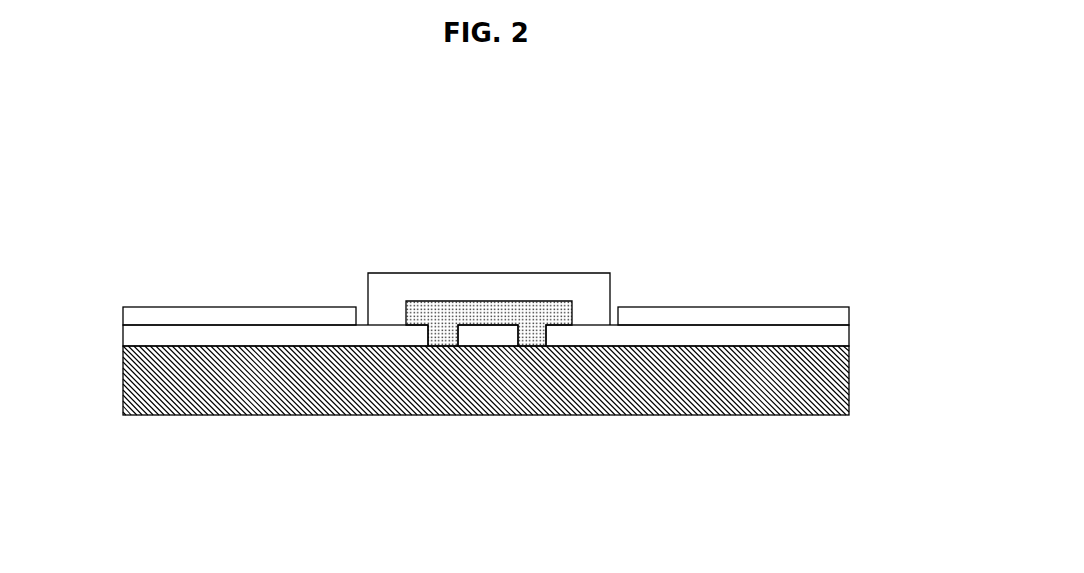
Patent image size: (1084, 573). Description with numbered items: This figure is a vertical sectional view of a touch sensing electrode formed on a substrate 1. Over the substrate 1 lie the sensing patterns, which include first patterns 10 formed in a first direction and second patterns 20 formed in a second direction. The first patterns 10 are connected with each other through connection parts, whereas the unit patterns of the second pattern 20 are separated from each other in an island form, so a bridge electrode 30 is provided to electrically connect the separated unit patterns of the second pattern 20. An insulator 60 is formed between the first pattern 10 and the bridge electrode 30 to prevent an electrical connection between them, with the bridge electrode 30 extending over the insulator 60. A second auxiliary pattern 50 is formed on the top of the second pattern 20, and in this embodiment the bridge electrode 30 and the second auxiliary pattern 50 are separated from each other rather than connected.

The substrate 1 is at (532, 395).
The first pattern 10 is at (485, 335).
The second pattern 20 is at (300, 335).
The bridge electrode 30 is at (590, 287).
The second auxiliary pattern 50 is at (823, 315).
The insulator 60 is at (550, 318).